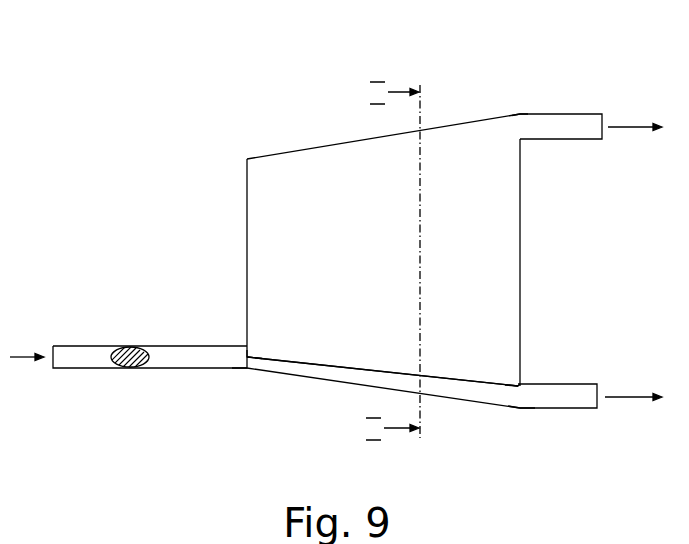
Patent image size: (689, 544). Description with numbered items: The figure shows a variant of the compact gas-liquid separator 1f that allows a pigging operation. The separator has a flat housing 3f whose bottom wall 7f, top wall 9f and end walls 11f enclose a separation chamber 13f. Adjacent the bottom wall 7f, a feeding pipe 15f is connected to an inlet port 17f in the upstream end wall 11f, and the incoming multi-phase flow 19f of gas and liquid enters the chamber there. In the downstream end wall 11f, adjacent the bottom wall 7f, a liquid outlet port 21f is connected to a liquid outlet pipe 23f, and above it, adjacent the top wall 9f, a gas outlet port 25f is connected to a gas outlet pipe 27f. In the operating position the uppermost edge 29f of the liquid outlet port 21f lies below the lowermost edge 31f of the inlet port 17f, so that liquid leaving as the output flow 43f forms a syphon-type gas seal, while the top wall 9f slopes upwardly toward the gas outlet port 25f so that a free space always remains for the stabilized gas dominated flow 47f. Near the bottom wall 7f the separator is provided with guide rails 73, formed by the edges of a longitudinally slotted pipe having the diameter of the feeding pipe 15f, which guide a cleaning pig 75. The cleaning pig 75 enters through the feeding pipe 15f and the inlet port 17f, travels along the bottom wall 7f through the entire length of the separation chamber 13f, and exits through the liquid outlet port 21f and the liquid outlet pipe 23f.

The gas-liquid separator 1f is at (338, 244).
The flat housing 3f is at (385, 219).
The bottom wall 7f is at (330, 381).
The top wall 9f is at (443, 124).
The end walls 11f is at (247, 270).
The separation chamber 13f is at (270, 209).
The feeding pipe 15f is at (180, 369).
The inlet port 17f is at (238, 358).
The fluid inlet flow 19f is at (22, 356).
The liquid outlet port 21f is at (517, 400).
The liquid outlet pipe 23f is at (565, 384).
The gas outlet port 25f is at (523, 127).
The gas outlet pipe 27f is at (565, 114).
The uppermost edge of the liquid outlet port 29f is at (505, 390).
The lowermost edge of the inlet port 31f is at (252, 357).
The liquid dominated output flow 43f is at (632, 397).
The gas dominated flow 47f is at (625, 127).
The guide rails 73 is at (344, 367).
The cleaning pig 75 is at (130, 347).